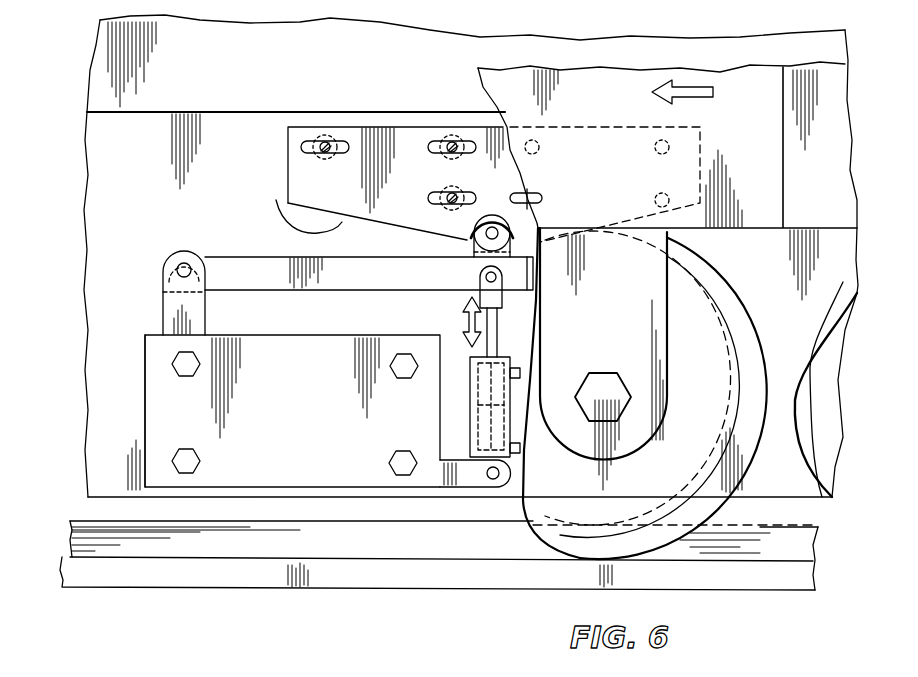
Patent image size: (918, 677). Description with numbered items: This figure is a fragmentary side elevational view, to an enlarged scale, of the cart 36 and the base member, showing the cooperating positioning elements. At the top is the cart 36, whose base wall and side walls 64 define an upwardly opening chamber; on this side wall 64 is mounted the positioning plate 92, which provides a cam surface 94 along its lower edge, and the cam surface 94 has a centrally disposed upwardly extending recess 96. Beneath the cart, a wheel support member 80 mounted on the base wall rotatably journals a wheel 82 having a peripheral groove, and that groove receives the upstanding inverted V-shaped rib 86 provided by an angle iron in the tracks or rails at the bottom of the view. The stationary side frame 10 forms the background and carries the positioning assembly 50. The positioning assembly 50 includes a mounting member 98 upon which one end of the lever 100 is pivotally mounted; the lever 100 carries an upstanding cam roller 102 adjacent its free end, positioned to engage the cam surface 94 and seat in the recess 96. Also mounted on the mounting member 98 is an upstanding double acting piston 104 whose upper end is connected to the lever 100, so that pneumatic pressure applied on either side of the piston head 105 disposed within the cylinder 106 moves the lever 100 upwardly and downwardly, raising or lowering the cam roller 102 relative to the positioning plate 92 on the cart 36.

The side frame 10 is at (87, 98).
The cart 36 is at (578, 66).
The side wall 64 is at (736, 135).
The positioning plate 92 is at (297, 162).
The cam surface 94 is at (297, 227).
The recess 96 is at (503, 212).
The lever 100 is at (267, 268).
The cam roller 102 is at (476, 235).
The double acting piston 104 is at (497, 333).
The piston head 105 is at (480, 402).
The cylinder 106 is at (492, 440).
The positioning assembly 50 is at (300, 422).
The mounting member 98 is at (168, 410).
The wheel support member 80 is at (613, 314).
The wheel 82 is at (738, 476).
The inverted V-shaped rib 86 is at (72, 530).